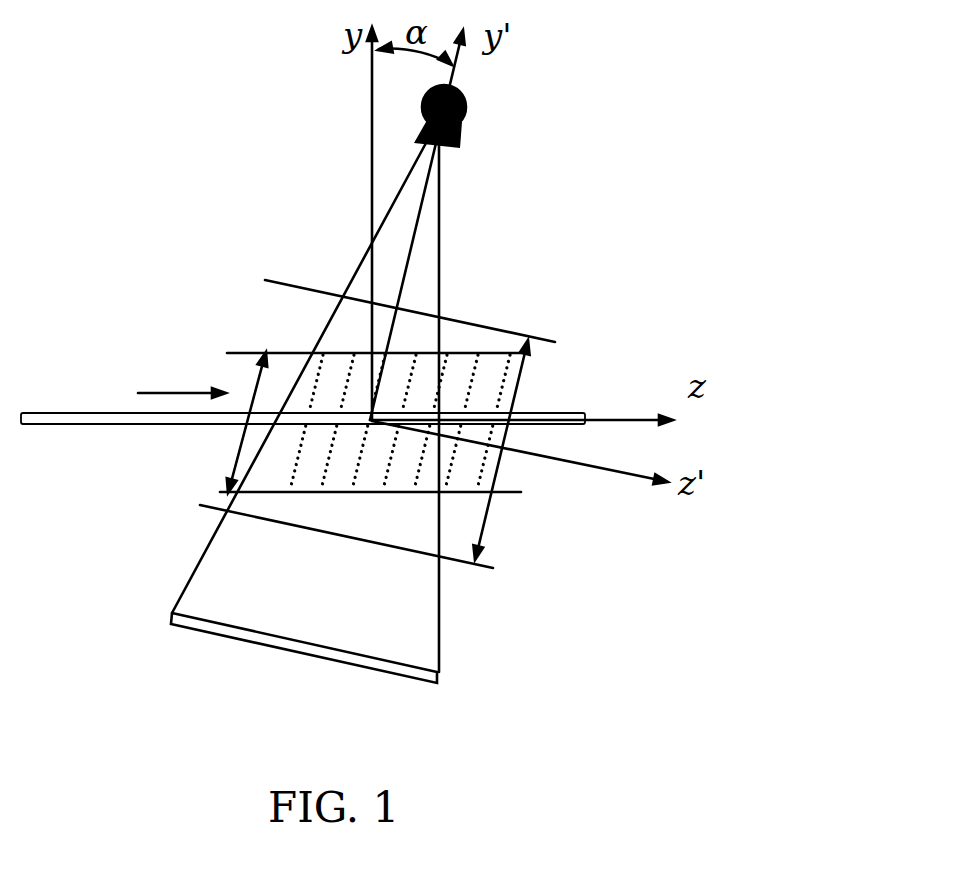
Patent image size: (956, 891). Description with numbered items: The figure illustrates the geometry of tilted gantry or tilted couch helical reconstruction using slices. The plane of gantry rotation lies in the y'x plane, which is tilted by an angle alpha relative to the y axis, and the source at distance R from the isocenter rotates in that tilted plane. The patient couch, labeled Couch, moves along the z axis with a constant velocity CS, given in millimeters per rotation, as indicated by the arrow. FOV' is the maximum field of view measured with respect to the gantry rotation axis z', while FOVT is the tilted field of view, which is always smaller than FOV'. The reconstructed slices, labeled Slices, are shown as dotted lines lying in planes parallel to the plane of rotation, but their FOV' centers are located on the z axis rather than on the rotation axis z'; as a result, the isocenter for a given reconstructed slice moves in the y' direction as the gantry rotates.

The source-to-isocenter distance R is at (417, 225).
The reconstructed slices Slices is at (499, 396).
The tilted field of view FOVT is at (250, 393).
The maximum field of view FOV' is at (546, 450).
The patient couch Couch is at (303, 397).
The couch speed CS is at (182, 378).